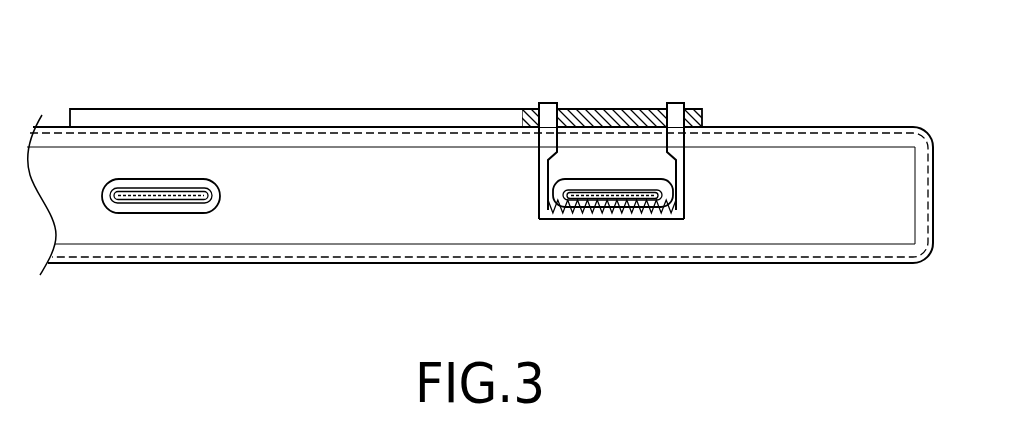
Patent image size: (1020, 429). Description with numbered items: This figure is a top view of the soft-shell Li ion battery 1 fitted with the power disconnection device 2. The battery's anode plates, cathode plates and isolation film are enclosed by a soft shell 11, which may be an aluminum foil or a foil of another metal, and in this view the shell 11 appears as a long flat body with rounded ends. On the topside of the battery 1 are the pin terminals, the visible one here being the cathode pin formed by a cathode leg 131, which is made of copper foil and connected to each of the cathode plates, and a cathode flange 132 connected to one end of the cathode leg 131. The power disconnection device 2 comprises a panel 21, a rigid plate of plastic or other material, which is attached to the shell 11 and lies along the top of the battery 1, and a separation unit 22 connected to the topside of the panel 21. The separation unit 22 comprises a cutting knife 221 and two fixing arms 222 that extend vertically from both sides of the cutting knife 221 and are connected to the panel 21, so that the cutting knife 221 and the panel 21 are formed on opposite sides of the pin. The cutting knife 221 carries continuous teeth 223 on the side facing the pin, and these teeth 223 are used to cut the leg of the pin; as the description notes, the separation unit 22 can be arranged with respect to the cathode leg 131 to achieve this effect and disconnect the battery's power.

The soft-shell Li ion battery 1 is at (288, 275).
The soft shell 11 is at (330, 263).
The cathode leg 131 is at (157, 200).
The cathode flange 132 is at (608, 198).
The power disconnection device 2 is at (425, 170).
The panel 21 is at (233, 117).
The separation unit 22 is at (626, 194).
The cutting knife 221 is at (648, 205).
The fixing arms 222 is at (547, 155).
The continuous teeth 223 is at (553, 191).